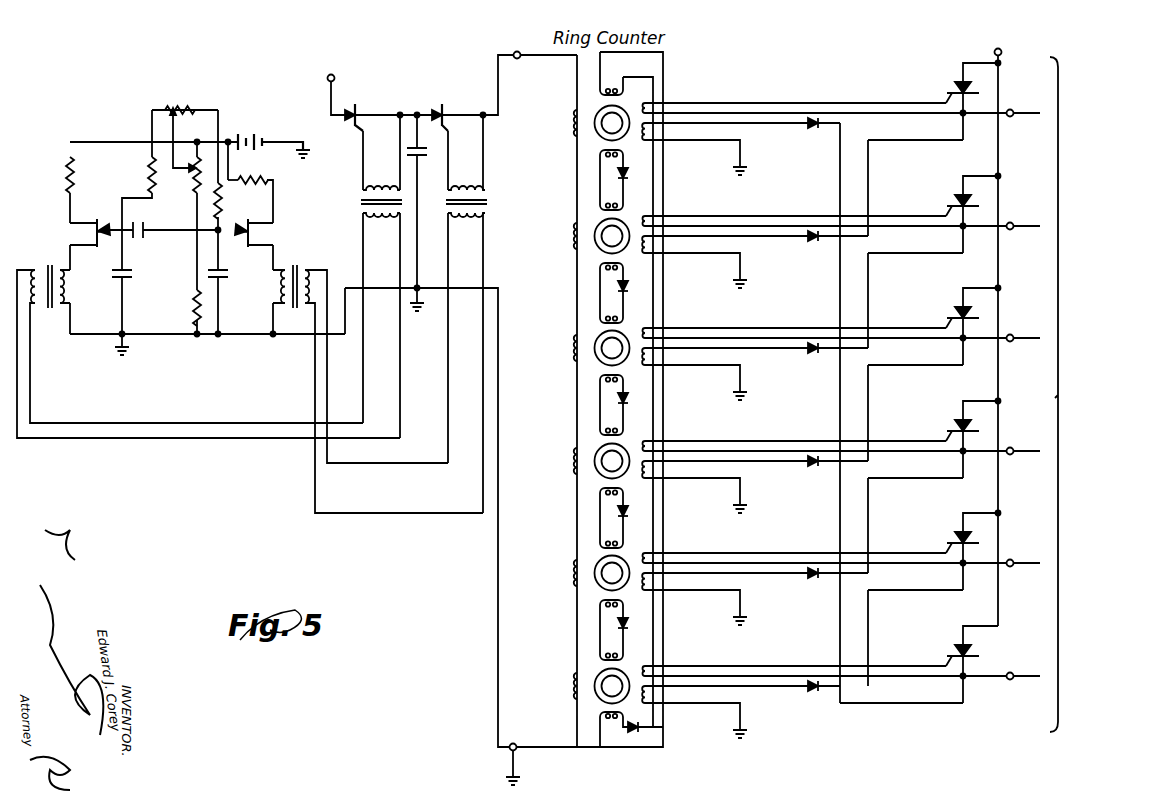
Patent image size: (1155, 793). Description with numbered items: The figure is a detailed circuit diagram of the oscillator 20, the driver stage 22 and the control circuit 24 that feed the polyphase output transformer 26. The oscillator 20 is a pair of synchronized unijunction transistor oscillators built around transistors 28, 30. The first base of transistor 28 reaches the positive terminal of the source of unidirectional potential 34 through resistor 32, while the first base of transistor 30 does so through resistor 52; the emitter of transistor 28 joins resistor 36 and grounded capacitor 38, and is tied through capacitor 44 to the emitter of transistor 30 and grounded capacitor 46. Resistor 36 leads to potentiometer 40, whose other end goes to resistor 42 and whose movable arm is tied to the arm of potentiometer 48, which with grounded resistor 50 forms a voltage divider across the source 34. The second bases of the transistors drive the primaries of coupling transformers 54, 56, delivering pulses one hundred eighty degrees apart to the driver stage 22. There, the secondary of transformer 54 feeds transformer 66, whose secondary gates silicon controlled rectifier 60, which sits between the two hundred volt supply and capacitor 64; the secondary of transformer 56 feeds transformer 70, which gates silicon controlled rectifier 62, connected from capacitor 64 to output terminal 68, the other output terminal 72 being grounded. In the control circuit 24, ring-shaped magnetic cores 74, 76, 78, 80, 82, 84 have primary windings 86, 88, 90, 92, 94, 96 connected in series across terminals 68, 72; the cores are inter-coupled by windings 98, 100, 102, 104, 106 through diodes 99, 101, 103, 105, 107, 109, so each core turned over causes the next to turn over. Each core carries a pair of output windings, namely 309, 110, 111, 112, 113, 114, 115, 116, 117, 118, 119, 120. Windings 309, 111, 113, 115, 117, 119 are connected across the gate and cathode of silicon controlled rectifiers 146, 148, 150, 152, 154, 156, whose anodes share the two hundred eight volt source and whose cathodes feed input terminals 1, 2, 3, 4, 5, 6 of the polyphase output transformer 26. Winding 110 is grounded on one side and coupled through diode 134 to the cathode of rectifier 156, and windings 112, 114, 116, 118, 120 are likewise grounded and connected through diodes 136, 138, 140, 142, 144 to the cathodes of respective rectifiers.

The oscillator 20 is at (229, 84).
The driver stage 22 is at (448, 85).
The control circuit 24 is at (842, 107).
The polyphase output transformer 26 is at (1124, 452).
The unijunction transistor 28 is at (94, 219).
The unijunction transistor 30 is at (250, 219).
The resistor 32 is at (68, 178).
The source of unidirectional potential 34 is at (252, 132).
The resistor 36 is at (150, 172).
The capacitor 38 is at (119, 277).
The potentiometer 40 is at (176, 108).
The resistor 42 is at (218, 199).
The capacitor 44 is at (138, 238).
The capacitor 46 is at (228, 278).
The potentiometer 48 is at (190, 178).
The resistor 50 is at (194, 302).
The resistor 52 is at (260, 178).
The coupling transformer 54 is at (57, 262).
The coupling transformer 56 is at (301, 261).
The silicon controlled rectifier 60 is at (357, 106).
The silicon controlled rectifier 62 is at (442, 106).
The capacitor 64 is at (420, 156).
The coupling transformer 66 is at (352, 207).
The output terminal 68 is at (517, 58).
The coupling transformer 70 is at (497, 202).
The output terminal 72 is at (514, 742).
The magnetic core 74 is at (618, 113).
The magnetic core 76 is at (618, 226).
The magnetic core 78 is at (618, 338).
The magnetic core 80 is at (618, 451).
The magnetic core 82 is at (618, 563).
The magnetic core 84 is at (618, 676).
The primary winding 86 is at (573, 130).
The primary winding 88 is at (573, 243).
The primary winding 90 is at (573, 355).
The primary winding 92 is at (573, 468).
The primary winding 94 is at (573, 580).
The primary winding 96 is at (573, 693).
The coupling winding 98 is at (600, 175).
The coupling winding 100 is at (600, 288).
The coupling winding 102 is at (600, 400).
The coupling winding 104 is at (600, 513).
The coupling winding 106 is at (600, 625).
The diode 99 is at (630, 172).
The diode 101 is at (628, 285).
The diode 103 is at (628, 397).
The diode 105 is at (628, 510).
The diode 107 is at (628, 622).
The diode 109 is at (634, 734).
The output winding 309 is at (655, 106).
The output winding 110 is at (648, 141).
The output winding 111 is at (655, 219).
The output winding 112 is at (648, 254).
The output winding 113 is at (655, 331).
The output winding 114 is at (648, 366).
The output winding 115 is at (655, 444).
The output winding 116 is at (648, 479).
The output winding 117 is at (655, 556).
The output winding 118 is at (648, 591).
The output winding 119 is at (655, 669).
The output winding 120 is at (648, 704).
The diode 134 is at (812, 127).
The diode 136 is at (812, 240).
The diode 138 is at (812, 352).
The diode 140 is at (812, 465).
The diode 142 is at (812, 577).
The diode 144 is at (815, 691).
The silicon controlled rectifier 146 is at (953, 89).
The silicon controlled rectifier 148 is at (953, 202).
The silicon controlled rectifier 150 is at (953, 314).
The silicon controlled rectifier 152 is at (953, 427).
The silicon controlled rectifier 154 is at (953, 539).
The silicon controlled rectifier 156 is at (953, 652).
The input terminal 1 is at (1015, 110).
The input terminal 2 is at (1015, 223).
The input terminal 3 is at (1015, 335).
The input terminal 4 is at (1013, 448).
The input terminal 5 is at (1015, 560).
The input terminal 6 is at (1013, 673).